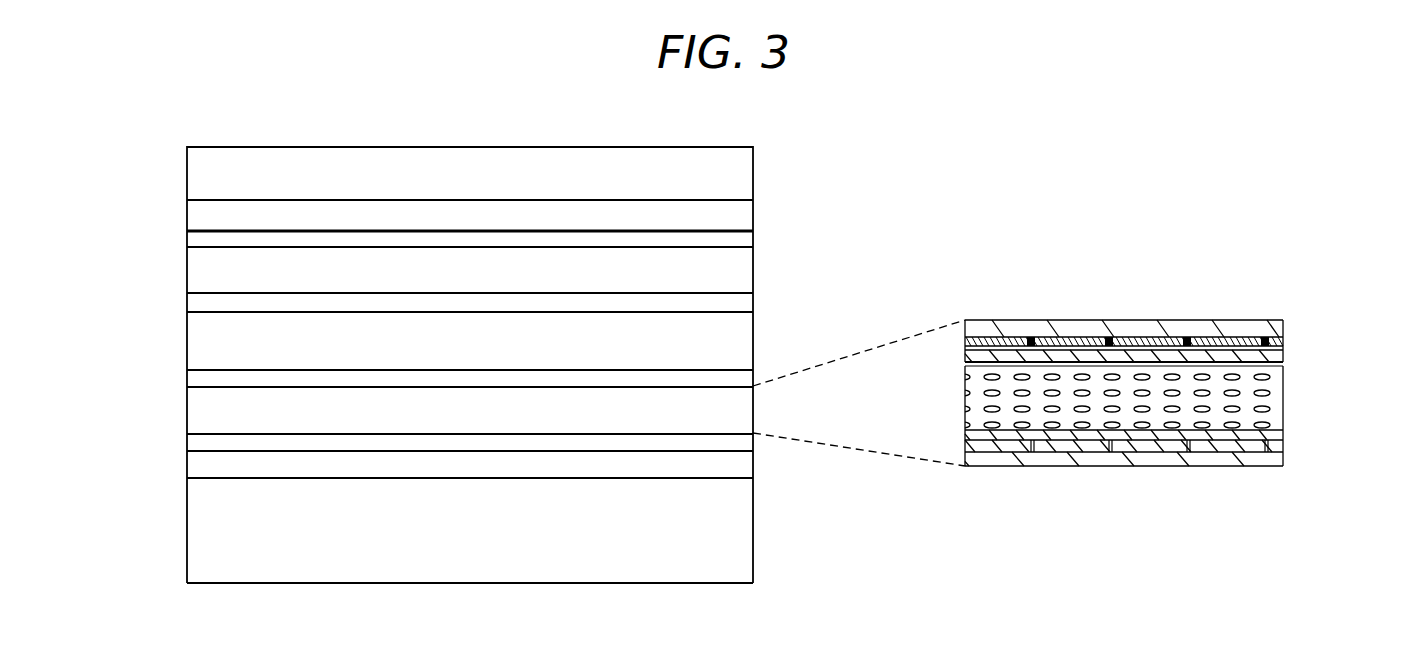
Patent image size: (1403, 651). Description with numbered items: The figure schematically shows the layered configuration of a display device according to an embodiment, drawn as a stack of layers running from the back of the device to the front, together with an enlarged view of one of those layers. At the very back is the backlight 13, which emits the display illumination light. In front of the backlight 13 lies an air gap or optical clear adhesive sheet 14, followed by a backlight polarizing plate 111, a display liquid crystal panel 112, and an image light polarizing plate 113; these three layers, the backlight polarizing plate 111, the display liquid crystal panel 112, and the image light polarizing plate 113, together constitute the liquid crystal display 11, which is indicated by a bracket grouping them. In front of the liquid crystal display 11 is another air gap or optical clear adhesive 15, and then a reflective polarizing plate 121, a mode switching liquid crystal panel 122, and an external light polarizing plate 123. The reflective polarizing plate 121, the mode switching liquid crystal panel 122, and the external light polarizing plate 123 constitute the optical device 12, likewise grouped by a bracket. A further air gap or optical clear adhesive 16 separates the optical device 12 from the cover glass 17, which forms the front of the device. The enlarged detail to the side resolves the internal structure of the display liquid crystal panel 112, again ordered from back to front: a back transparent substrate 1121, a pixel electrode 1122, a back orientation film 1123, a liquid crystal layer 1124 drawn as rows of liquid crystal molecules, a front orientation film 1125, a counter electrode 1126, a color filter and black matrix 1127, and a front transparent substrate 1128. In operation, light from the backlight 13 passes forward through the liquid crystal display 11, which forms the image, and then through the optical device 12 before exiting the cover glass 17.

The liquid crystal display 11 is at (100, 397).
The backlight polarizing plate 111 is at (187, 453).
The display liquid crystal panel 112 is at (187, 417).
The image light polarizing plate 113 is at (187, 381).
The optical device 12 is at (100, 250).
The reflective polarizing plate 121 is at (187, 310).
The mode switching liquid crystal panel 122 is at (187, 277).
The external light polarizing plate 123 is at (187, 243).
The backlight 13 is at (187, 523).
The air gap or optical clear adhesive 14 is at (187, 477).
The air gap or optical clear adhesive 15 is at (187, 348).
The air gap or optical clear adhesive 16 is at (187, 213).
The cover glass 17 is at (187, 184).
The back transparent substrate 1121 is at (1283, 460).
The pixel electrode 1122 is at (1283, 446).
The back orientation film 1123 is at (967, 437).
The liquid crystal layer 1124 is at (1283, 396).
The front orientation film 1125 is at (967, 362).
The counter electrode 1126 is at (1283, 355).
The color filter and black matrix 1127 is at (1283, 342).
The front transparent substrate 1128 is at (1283, 327).